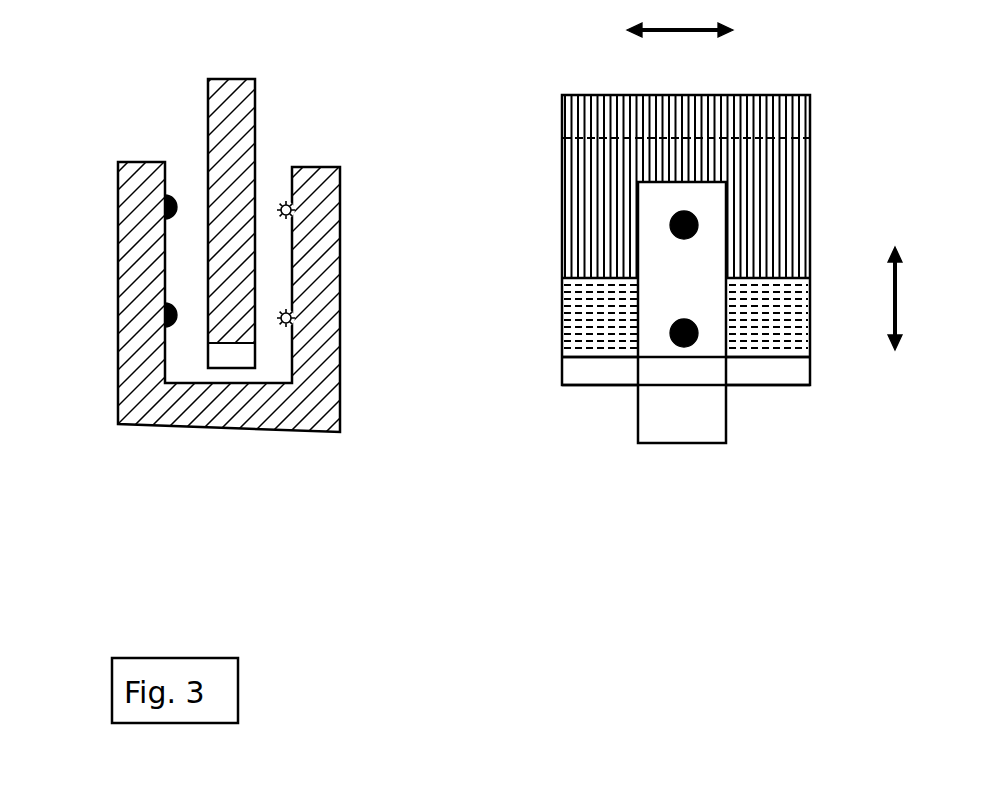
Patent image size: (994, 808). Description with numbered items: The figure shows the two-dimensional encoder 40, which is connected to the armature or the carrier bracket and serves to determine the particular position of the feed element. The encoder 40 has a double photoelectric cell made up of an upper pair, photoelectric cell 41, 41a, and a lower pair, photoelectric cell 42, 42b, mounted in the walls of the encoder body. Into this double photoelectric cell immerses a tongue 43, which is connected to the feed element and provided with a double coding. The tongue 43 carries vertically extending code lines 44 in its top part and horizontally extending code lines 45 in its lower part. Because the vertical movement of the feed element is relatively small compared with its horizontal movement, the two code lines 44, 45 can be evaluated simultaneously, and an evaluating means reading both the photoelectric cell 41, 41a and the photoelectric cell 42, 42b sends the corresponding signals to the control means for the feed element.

The two-dimensional encoder 40 is at (232, 475).
The photoelectric cell 41 is at (167, 202).
The photoelectric cell 41a is at (292, 207).
The photoelectric cell 42 is at (165, 308).
The photoelectric cell 42b is at (292, 318).
The tongue 43 is at (233, 93).
The vertically extending code lines 44 is at (608, 108).
The horizontally extending code lines 45 is at (578, 322).